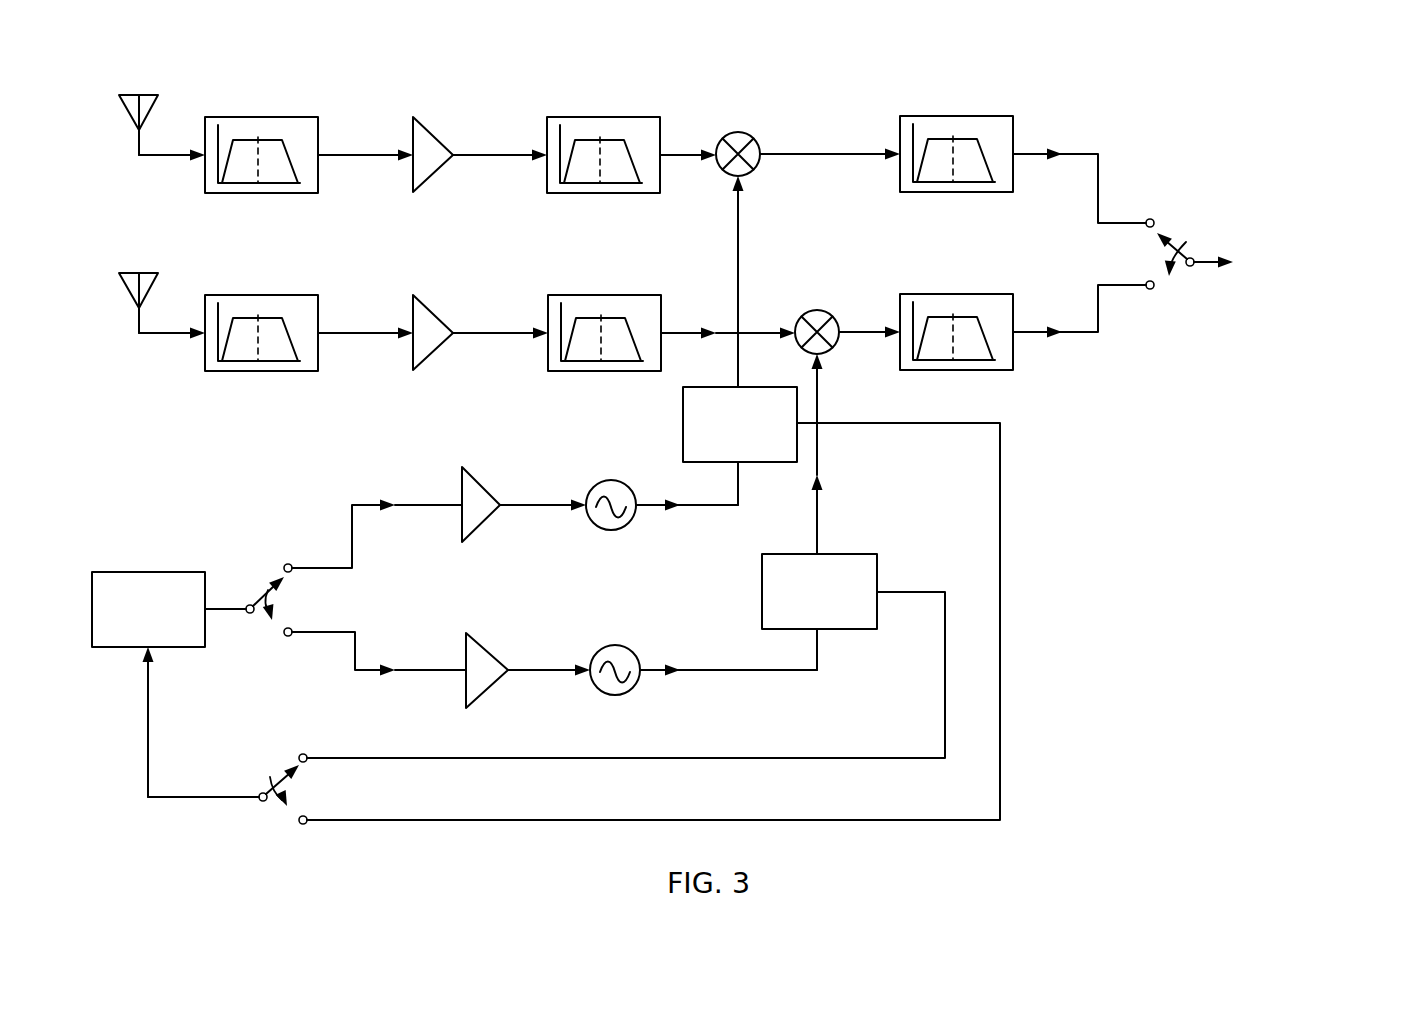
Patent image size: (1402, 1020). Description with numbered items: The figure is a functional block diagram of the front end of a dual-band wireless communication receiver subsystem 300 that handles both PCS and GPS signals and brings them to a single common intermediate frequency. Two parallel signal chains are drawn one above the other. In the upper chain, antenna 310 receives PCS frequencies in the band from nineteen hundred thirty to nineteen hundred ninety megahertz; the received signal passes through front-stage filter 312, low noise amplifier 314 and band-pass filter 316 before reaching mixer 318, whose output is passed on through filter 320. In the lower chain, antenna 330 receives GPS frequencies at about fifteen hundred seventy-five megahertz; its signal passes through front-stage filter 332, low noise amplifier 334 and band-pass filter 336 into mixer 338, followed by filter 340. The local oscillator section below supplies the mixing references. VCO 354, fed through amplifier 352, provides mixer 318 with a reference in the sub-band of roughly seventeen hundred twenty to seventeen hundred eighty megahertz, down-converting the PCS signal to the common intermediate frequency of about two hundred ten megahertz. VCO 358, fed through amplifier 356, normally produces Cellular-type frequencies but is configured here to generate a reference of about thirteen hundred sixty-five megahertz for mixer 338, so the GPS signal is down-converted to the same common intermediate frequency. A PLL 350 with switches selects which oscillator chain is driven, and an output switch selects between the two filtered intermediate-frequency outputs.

The receiver subsystem 300 is at (733, 439).
The antenna 310 is at (128, 117).
The front-stage filter 312 is at (265, 117).
The low noise amplifier 314 is at (432, 132).
The band-pass filter 316 is at (617, 117).
The mixer 318 is at (740, 132).
The PCS IF band-pass filter 320 is at (983, 116).
The antenna 330 is at (128, 295).
The front-stage filter 332 is at (265, 296).
The low noise amplifier 334 is at (432, 310).
The band-pass filter 336 is at (614, 295).
The mixer 338 is at (818, 310).
The GPS IF band-pass filter 340 is at (983, 294).
The phase-locked loop 350 is at (158, 572).
The PCS local oscillator amplifier 352 is at (478, 478).
The VCO 354 is at (612, 481).
The cellular local oscillator amplifier 356 is at (482, 705).
The VCO 358 is at (615, 695).